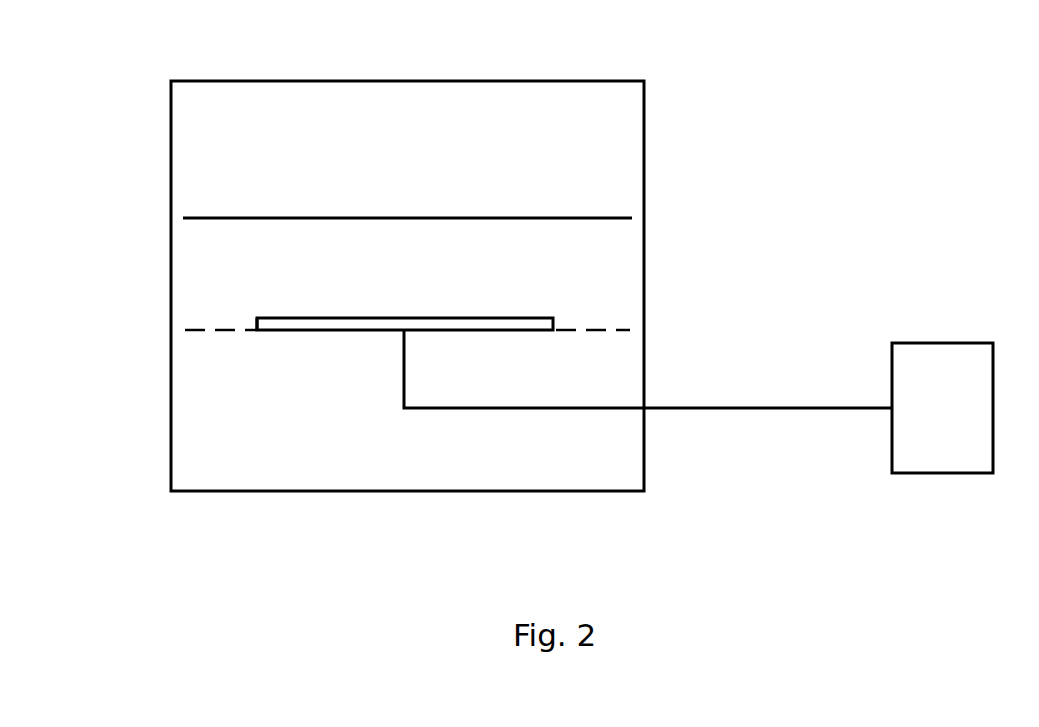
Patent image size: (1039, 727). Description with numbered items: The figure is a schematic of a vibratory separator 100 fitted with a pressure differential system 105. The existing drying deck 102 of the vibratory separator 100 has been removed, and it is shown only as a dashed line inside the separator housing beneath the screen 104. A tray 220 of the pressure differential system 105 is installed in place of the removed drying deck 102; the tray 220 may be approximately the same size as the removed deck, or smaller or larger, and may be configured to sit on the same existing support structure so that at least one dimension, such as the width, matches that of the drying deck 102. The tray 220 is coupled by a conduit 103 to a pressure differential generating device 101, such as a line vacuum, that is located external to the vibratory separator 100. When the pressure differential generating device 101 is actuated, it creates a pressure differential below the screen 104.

The vibratory separator 100 is at (171, 87).
The pressure differential generating device 101 is at (942, 408).
The drying deck 102 is at (222, 328).
The conduit 103 is at (843, 406).
The screen 104 is at (219, 218).
The pressure differential system 105 is at (788, 242).
The tray 220 is at (258, 329).